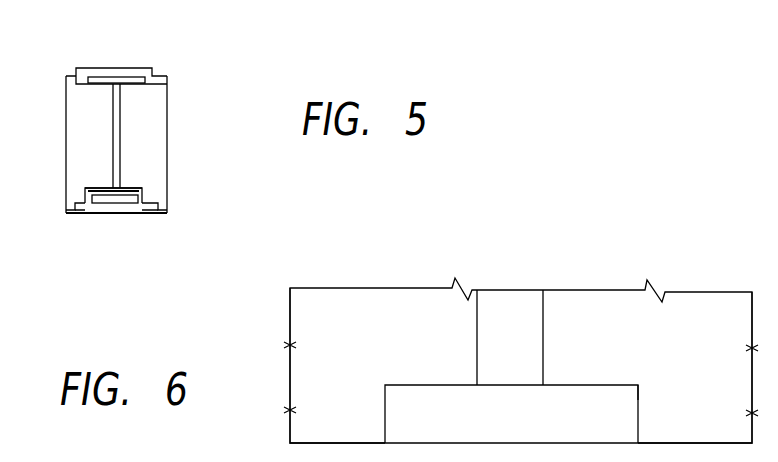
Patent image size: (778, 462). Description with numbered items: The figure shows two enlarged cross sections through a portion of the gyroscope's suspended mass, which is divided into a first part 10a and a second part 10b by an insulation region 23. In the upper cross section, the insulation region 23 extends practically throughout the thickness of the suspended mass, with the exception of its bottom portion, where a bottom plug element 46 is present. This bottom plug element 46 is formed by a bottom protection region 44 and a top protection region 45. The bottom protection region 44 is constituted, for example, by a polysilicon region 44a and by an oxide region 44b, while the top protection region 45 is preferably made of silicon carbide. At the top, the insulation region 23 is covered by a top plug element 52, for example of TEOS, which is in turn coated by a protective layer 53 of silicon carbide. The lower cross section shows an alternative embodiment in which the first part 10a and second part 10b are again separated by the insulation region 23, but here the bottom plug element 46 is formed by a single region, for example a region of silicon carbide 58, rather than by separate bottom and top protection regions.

In FIG. 5, the first part 10a is at (66, 188).
In FIG. 6, the first part 10a is at (437, 350).
In FIG. 5, the second part 10b is at (167, 212).
In FIG. 6, the second part 10b is at (728, 388).
In FIG. 5, the insulation region 23 is at (115, 135).
In FIG. 6, the insulation region 23 is at (517, 308).
In FIG. 5, the bottom protection region 44 is at (150, 198).
In FIG. 5, the polysilicon region 44a is at (126, 205).
In FIG. 5, the oxide region 44b is at (126, 187).
In FIG. 5, the top protection region 45 is at (132, 188).
In FIG. 5, the bottom plug element 46 is at (96, 218).
In FIG. 6, the bottom plug element 46 is at (632, 378).
In FIG. 5, the top plug element 52 is at (158, 74).
In FIG. 5, the protective layer 53 is at (117, 68).
In FIG. 6, the silicon carbide region 58 is at (397, 393).